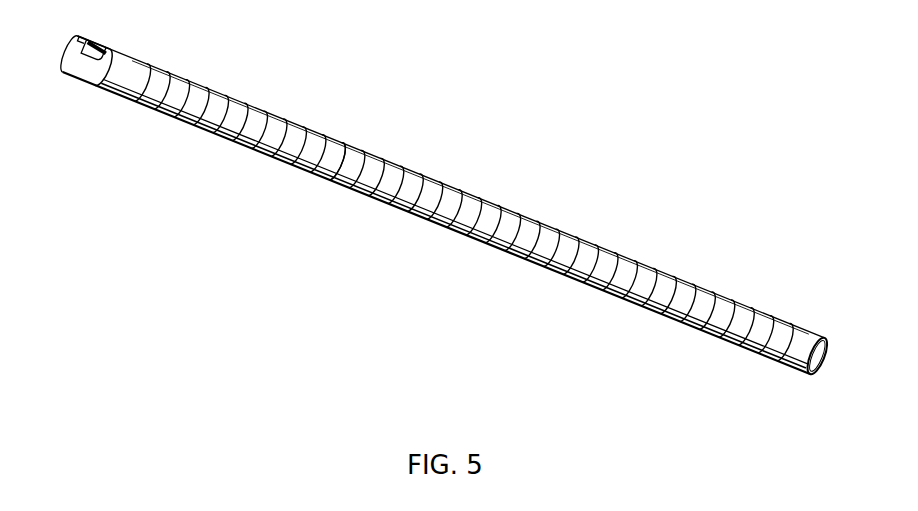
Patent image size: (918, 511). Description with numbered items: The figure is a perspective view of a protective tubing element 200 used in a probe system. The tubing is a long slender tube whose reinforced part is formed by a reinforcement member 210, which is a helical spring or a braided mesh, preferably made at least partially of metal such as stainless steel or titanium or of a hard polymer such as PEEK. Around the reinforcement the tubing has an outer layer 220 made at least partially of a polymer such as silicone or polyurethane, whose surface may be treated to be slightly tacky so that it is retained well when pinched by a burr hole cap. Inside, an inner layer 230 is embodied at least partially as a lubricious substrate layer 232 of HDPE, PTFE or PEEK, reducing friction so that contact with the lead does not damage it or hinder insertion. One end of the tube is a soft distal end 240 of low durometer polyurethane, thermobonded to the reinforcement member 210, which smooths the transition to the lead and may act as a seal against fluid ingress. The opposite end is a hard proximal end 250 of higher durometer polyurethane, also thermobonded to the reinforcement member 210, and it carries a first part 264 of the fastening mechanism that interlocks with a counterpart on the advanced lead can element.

The protective tubing element 200 is at (398, 190).
The reinforcement member 210 is at (523, 250).
The outer layer 220 is at (230, 95).
The inner layer 230 is at (321, 160).
The lubricious substrate layer 232 is at (345, 173).
The distal end 240 is at (807, 343).
The proximal end 250 is at (113, 90).
The first part of the fastening mechanism 264 is at (77, 62).